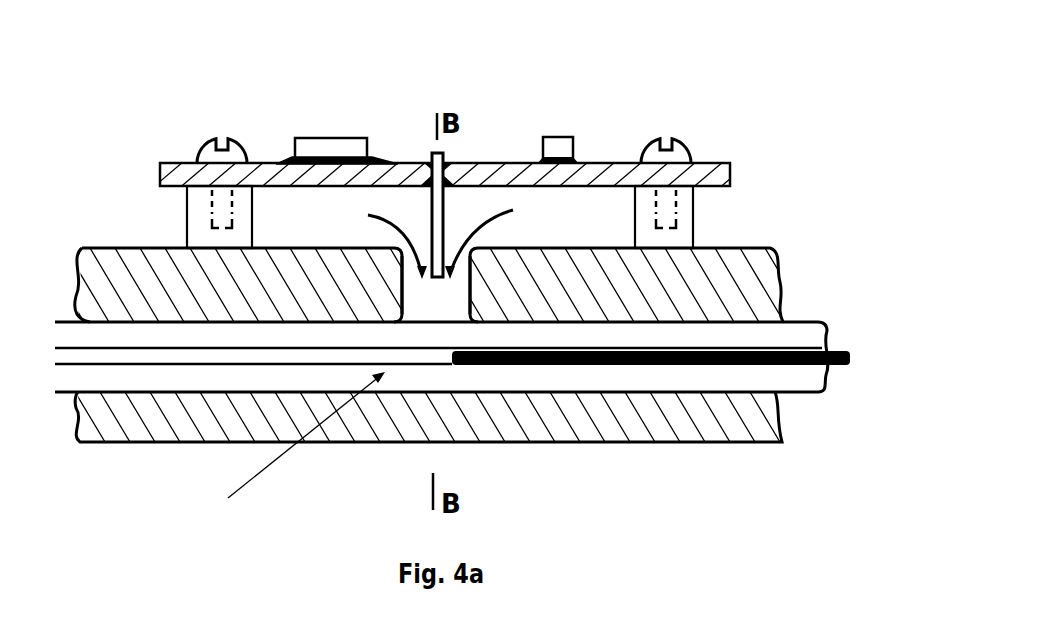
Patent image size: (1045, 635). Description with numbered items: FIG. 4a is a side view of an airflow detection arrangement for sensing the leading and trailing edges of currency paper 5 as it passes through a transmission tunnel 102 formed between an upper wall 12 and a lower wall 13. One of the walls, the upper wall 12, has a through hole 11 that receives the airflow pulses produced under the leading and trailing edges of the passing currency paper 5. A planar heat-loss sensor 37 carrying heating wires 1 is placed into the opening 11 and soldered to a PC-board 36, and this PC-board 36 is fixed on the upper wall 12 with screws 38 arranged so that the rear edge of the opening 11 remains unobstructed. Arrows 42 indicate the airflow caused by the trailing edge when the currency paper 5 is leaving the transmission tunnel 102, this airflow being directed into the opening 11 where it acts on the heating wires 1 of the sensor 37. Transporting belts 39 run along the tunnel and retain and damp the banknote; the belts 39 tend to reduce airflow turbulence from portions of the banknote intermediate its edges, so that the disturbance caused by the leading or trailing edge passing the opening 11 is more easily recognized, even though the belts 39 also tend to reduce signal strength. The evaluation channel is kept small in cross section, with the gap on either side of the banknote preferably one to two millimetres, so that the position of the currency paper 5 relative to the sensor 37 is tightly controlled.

The heating wires 1 is at (450, 266).
The currency paper 5 is at (787, 325).
The through hole 11 is at (445, 305).
The upper wall 12 is at (757, 248).
The lower wall 13 is at (729, 432).
The PC-board 36 is at (592, 170).
The planar heat-loss sensor 37 is at (443, 162).
The screws 38 is at (682, 155).
The transporting belts 39 is at (775, 382).
The arrows 42 is at (440, 233).
The transmission tunnel 102 is at (281, 452).